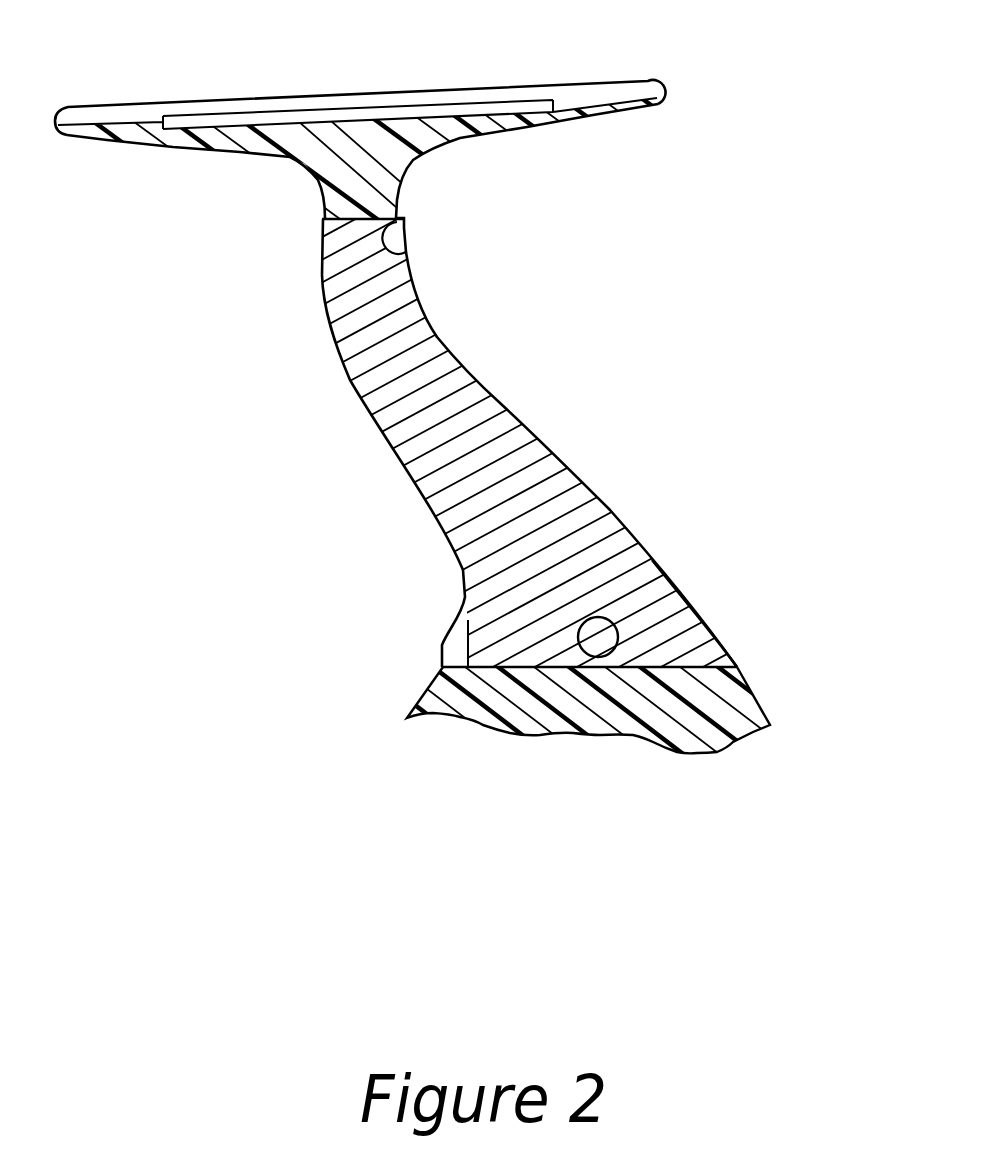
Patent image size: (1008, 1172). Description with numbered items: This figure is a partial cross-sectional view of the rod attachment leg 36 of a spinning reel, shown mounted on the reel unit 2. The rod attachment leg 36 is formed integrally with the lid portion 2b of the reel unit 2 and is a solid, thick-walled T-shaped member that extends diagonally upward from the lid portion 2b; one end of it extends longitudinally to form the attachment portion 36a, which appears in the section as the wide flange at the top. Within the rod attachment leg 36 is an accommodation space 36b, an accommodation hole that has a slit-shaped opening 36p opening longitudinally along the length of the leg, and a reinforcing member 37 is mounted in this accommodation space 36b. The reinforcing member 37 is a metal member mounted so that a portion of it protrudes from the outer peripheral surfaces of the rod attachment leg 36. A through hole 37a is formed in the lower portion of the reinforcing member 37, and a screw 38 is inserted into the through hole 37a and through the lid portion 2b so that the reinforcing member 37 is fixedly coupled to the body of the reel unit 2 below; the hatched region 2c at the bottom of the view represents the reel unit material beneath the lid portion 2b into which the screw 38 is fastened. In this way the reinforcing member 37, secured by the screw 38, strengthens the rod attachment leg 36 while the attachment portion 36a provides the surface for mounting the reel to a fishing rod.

The reel unit 2 is at (550, 372).
The lid portion 2b is at (447, 686).
The board core 2c is at (775, 684).
The rod attachment leg 36 is at (300, 212).
The attachment portion 36a is at (387, 91).
The accommodation space 36b is at (408, 253).
The slit-shaped opening 36p is at (402, 236).
The reinforcing member 37 is at (580, 492).
The through hole 37a is at (608, 652).
The screw 38 is at (603, 620).